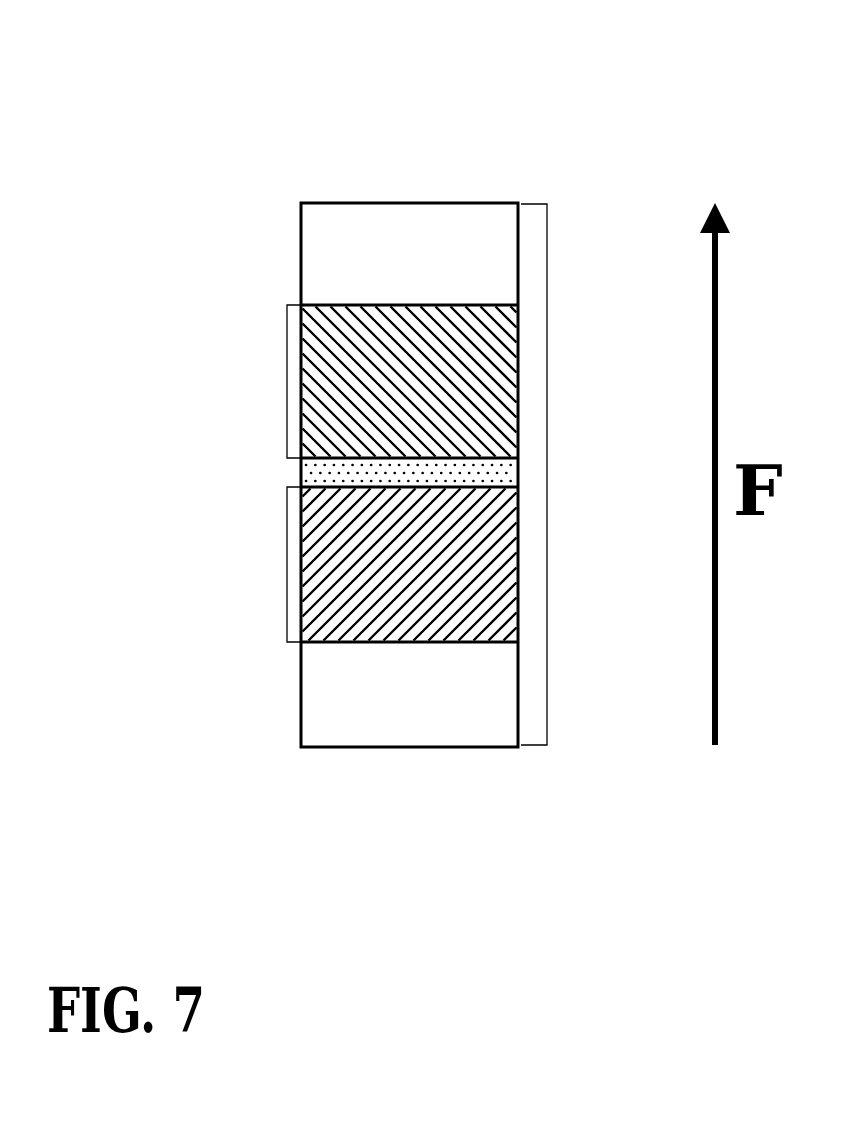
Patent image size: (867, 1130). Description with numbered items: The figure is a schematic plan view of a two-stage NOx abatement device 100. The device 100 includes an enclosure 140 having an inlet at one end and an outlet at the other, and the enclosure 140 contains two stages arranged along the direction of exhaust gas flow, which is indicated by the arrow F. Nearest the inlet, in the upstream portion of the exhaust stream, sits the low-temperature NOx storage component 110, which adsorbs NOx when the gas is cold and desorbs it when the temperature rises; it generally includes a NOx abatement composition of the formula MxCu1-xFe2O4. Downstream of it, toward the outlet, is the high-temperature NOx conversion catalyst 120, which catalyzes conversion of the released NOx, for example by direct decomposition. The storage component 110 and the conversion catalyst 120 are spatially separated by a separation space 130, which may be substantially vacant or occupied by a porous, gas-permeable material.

The two-stage NOx abatement device 100 is at (633, 100).
The low-temperature NOx storage component 110 is at (287, 567).
The high-temperature NOx conversion catalyst 120 is at (287, 383).
The separation space 130 is at (280, 473).
The enclosure 140 is at (547, 474).